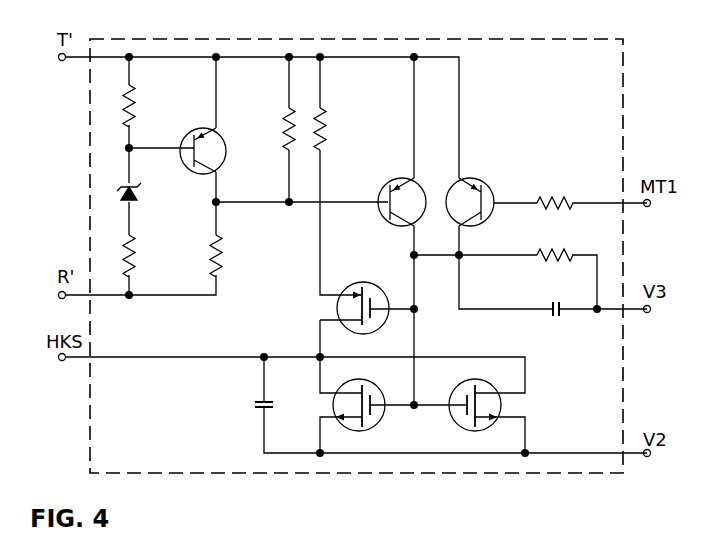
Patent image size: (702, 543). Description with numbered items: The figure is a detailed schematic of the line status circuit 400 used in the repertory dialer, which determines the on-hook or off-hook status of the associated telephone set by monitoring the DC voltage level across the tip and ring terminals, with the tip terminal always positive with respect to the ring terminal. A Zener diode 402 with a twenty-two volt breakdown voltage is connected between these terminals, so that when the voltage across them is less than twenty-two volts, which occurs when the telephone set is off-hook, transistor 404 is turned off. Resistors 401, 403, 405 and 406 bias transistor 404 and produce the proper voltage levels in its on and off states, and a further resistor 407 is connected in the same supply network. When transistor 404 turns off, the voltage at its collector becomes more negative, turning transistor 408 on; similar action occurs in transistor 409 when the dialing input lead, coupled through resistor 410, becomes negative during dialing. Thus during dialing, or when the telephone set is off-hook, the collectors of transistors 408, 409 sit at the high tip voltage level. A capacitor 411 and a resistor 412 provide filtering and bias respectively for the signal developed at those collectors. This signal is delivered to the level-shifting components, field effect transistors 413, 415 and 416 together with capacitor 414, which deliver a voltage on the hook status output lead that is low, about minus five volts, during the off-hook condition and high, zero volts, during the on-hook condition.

The line status circuit 400 is at (395, 39).
The resistor 401 is at (133, 96).
The Zener diode 402 is at (134, 193).
The resistor 403 is at (134, 261).
The transistor 404 is at (226, 152).
The resistor 405 is at (213, 248).
The resistor 406 is at (286, 111).
The resistor 407 is at (323, 112).
The transistor 408 is at (398, 180).
The transistor 409 is at (477, 179).
The resistor 410 is at (553, 197).
The capacitor 411 is at (552, 305).
The resistor 412 is at (553, 250).
The field effect transistor 413 is at (371, 283).
The capacitor 414 is at (255, 400).
The field effect transistor 415 is at (380, 419).
The field effect transistor 416 is at (460, 385).